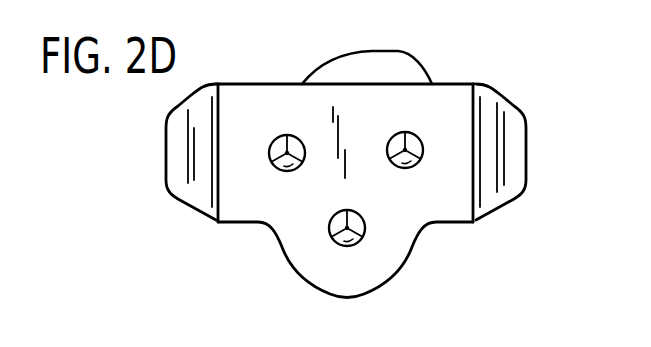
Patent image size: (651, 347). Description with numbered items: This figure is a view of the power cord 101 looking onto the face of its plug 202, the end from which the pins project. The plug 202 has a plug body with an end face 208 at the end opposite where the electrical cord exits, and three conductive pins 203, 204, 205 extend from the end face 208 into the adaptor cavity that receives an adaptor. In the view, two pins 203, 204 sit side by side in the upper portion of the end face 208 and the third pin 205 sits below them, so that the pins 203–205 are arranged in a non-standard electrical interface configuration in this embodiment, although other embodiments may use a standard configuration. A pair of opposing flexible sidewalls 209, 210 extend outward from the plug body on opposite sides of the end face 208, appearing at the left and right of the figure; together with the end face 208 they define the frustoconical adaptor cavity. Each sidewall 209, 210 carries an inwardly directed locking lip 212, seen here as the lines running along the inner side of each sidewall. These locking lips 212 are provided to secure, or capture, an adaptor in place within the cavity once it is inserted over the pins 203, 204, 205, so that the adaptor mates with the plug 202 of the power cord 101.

The power cord 101 is at (356, 159).
The plug 202 is at (458, 84).
The conductive pin 203 is at (275, 141).
The conductive pin 204 is at (422, 144).
The conductive pin 205 is at (342, 246).
The end face 208 is at (389, 104).
The flexible sidewall 209 is at (166, 163).
The flexible sidewall 210 is at (526, 173).
The locking lip 212 is at (202, 157).